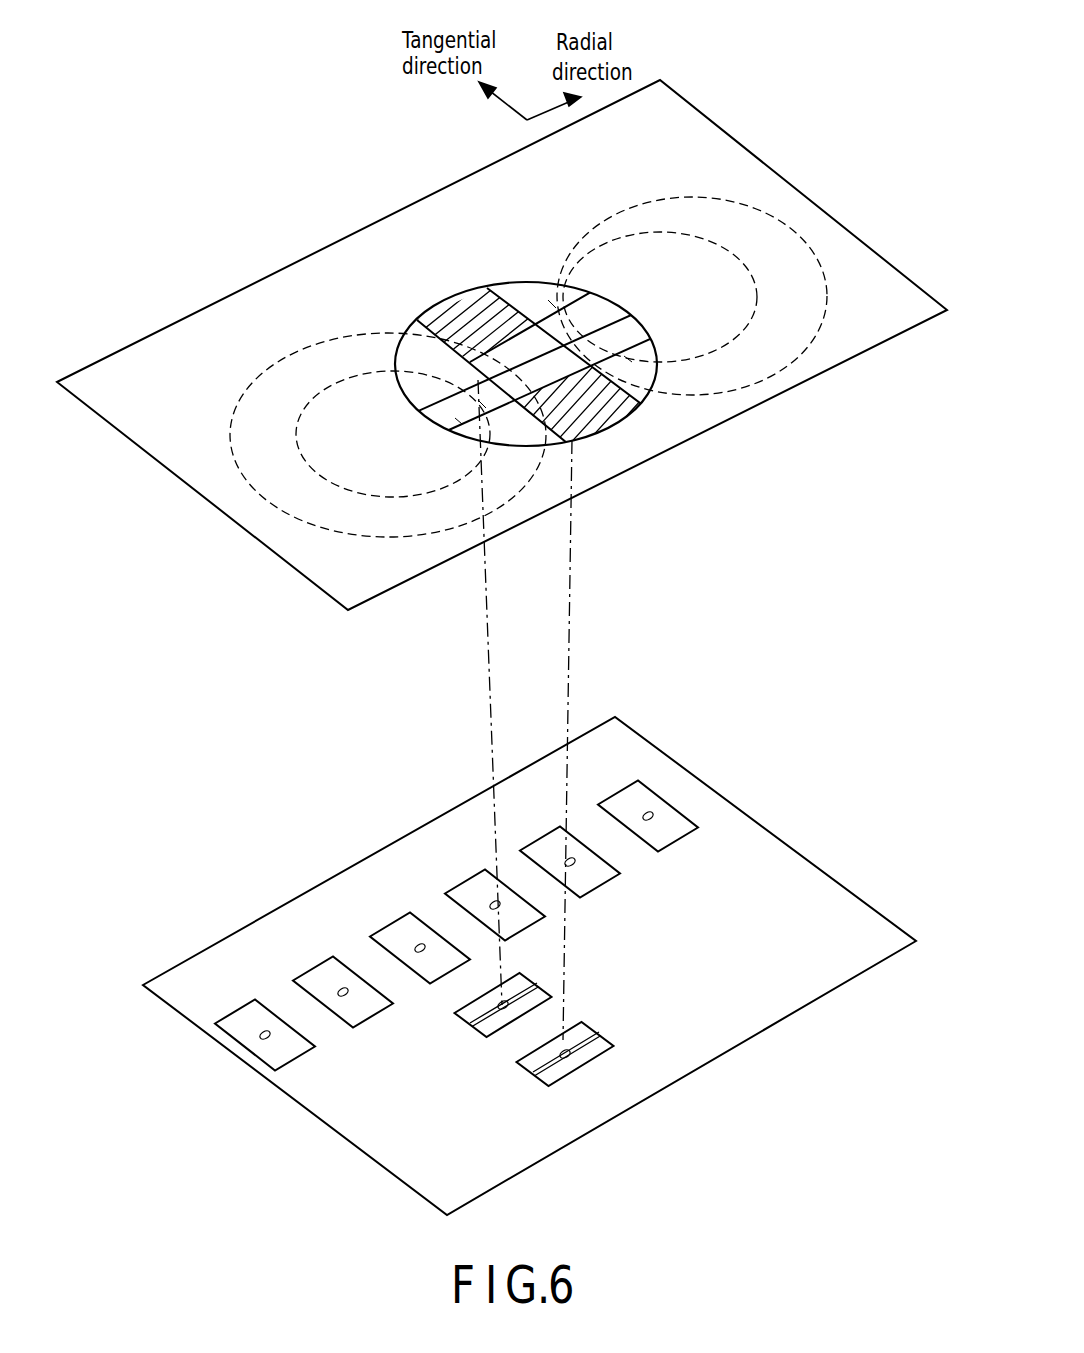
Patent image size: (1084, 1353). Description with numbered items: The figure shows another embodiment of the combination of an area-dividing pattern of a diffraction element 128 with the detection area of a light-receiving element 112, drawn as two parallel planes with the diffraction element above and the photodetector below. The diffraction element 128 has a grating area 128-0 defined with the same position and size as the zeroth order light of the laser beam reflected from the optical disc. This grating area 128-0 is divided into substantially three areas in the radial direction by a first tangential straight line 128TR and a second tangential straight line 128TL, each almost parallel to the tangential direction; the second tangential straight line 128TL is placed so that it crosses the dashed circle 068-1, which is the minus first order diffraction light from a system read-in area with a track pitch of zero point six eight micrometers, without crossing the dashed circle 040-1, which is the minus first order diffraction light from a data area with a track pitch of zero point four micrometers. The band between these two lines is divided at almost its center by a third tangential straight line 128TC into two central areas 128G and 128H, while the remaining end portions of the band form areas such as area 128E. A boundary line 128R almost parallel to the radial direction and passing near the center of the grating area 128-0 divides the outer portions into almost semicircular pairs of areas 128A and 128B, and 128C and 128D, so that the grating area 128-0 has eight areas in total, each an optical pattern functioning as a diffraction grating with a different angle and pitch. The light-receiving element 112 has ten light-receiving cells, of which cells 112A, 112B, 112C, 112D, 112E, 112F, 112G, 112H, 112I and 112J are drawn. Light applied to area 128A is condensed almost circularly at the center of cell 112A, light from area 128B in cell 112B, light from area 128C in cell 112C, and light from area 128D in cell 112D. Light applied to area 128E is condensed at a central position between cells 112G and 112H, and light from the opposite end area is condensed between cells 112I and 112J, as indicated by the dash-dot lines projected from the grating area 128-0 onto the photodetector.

The diffraction element 128 is at (388, 230).
The grating area 128-0 is at (460, 300).
The area 128E is at (450, 307).
The first tangential straight line 128TR is at (522, 332).
The third tangential straight line 128TC is at (548, 410).
The second tangential straight line 128TL is at (530, 413).
The area 128A is at (470, 370).
The area 128B is at (457, 420).
The area 128C is at (553, 305).
The area 128D is at (628, 360).
The area 128G is at (475, 392).
The area 128H is at (545, 330).
The boundary line 128R is at (480, 405).
The circle 068-1 is at (355, 345).
The circle 040-1 is at (270, 397).
The light-receiving element 112 is at (400, 845).
The cell 112A is at (615, 800).
The cell 112B is at (532, 848).
The cell 112C is at (455, 890).
The cell 112D is at (388, 928).
The cell 112E is at (317, 963).
The cell 112F is at (237, 1010).
The cell 112G is at (460, 1015).
The cell 112H is at (483, 1035).
The cell 112I is at (524, 1063).
The cell 112J is at (543, 1087).